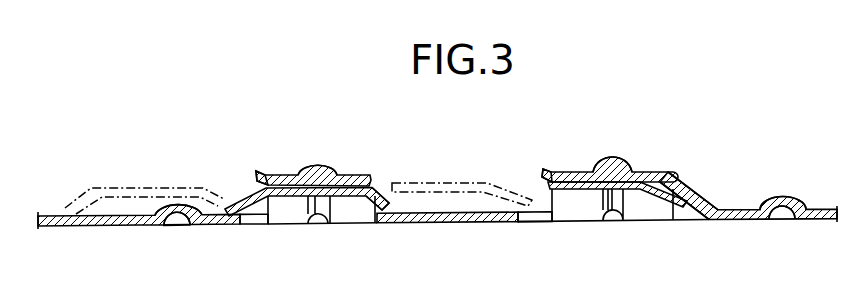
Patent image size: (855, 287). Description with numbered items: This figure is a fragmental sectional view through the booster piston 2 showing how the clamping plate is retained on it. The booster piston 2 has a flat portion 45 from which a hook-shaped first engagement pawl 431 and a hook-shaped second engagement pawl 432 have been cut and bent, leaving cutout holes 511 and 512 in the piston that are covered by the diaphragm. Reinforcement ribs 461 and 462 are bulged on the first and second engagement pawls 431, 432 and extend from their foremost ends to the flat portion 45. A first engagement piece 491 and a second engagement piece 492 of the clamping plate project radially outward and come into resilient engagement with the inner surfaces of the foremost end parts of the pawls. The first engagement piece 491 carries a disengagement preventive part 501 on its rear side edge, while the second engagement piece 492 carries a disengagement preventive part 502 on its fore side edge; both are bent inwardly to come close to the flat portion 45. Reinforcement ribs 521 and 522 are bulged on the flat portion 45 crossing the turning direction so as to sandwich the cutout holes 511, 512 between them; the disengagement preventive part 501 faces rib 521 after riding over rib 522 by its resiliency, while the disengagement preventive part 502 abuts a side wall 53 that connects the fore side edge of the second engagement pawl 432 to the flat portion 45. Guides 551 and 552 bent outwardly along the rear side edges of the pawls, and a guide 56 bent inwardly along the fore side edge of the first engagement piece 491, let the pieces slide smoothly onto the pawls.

The booster piston 2 is at (435, 222).
The flat portion of the booster piston 45 is at (437, 212).
The first engagement pawl 431 is at (281, 166).
The second engagement pawl 432 is at (660, 165).
The reinforcement rib 461 is at (318, 164).
The reinforcement rib 462 is at (617, 158).
The first engagement piece 491 is at (350, 238).
The second engagement piece 492 is at (473, 172).
The disengagement preventive part 501 is at (239, 197).
The disengagement preventive part 502 is at (677, 181).
The cutout hole 511 is at (256, 220).
The cutout hole 512 is at (540, 220).
The reinforcement rib 521 is at (178, 203).
The reinforcement rib 522 is at (782, 193).
The side wall 53 is at (696, 184).
The guide 551 is at (262, 171).
The guide 552 is at (543, 170).
The guide 56 is at (372, 188).